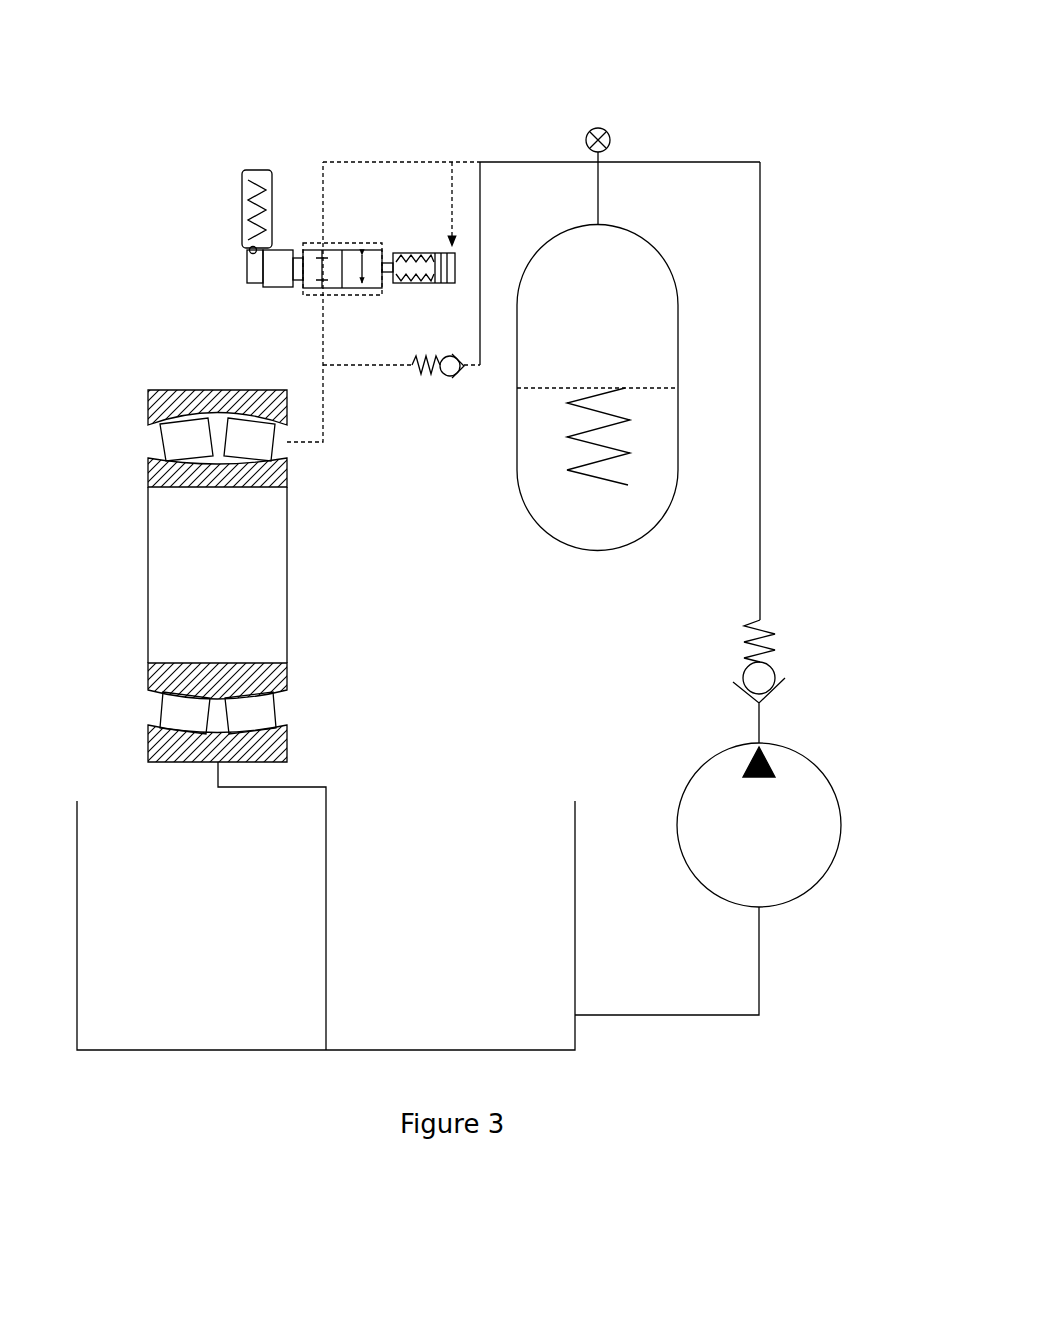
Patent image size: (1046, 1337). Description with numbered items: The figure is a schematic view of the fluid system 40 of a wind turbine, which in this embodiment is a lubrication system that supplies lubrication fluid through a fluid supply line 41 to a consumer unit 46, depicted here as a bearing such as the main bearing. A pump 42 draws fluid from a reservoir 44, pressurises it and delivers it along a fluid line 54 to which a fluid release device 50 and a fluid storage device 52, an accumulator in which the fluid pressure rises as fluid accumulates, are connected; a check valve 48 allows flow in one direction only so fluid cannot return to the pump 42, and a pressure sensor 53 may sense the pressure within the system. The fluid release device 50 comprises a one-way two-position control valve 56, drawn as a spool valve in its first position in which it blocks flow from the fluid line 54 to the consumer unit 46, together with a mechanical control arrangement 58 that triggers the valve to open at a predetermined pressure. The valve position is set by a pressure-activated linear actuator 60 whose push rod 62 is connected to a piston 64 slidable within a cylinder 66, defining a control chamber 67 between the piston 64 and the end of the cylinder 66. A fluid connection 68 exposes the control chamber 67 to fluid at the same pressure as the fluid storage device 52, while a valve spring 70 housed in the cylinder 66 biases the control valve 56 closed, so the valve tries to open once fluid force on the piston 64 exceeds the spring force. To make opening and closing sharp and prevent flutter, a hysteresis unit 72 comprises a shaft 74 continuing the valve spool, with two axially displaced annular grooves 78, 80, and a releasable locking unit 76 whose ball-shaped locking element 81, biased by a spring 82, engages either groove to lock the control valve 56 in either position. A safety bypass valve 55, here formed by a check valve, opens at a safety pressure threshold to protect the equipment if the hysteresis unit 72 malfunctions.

The fluid system 40 is at (789, 105).
The fluid supply line 41 is at (324, 397).
The pump 42 is at (823, 870).
The reservoir 44 is at (223, 1051).
The consumer unit 46 is at (148, 553).
The check valve 48 is at (774, 670).
The fluid release device 50 is at (291, 86).
The fluid storage device 52 is at (553, 537).
The pressure sensor 53 is at (597, 127).
The fluid line 54 is at (762, 403).
The safety bypass valve 55 is at (431, 372).
The control valve 56 is at (358, 242).
The mechanical control arrangement 58 is at (442, 178).
The pressure-activated linear actuator 60 is at (364, 303).
The push rod 62 is at (403, 253).
The piston 64 is at (425, 285).
The cylinder 66 is at (413, 255).
The control chamber 67 is at (447, 285).
The fluid connection 68 is at (455, 250).
The valve spring 70 is at (427, 255).
The hysteresis unit 72 is at (192, 326).
The shaft 74 is at (247, 267).
The releasable locking unit 76 is at (262, 170).
The annular groove 78 is at (253, 284).
The annular groove 80 is at (304, 247).
The locking element 81 is at (249, 250).
The spring 82 is at (270, 223).